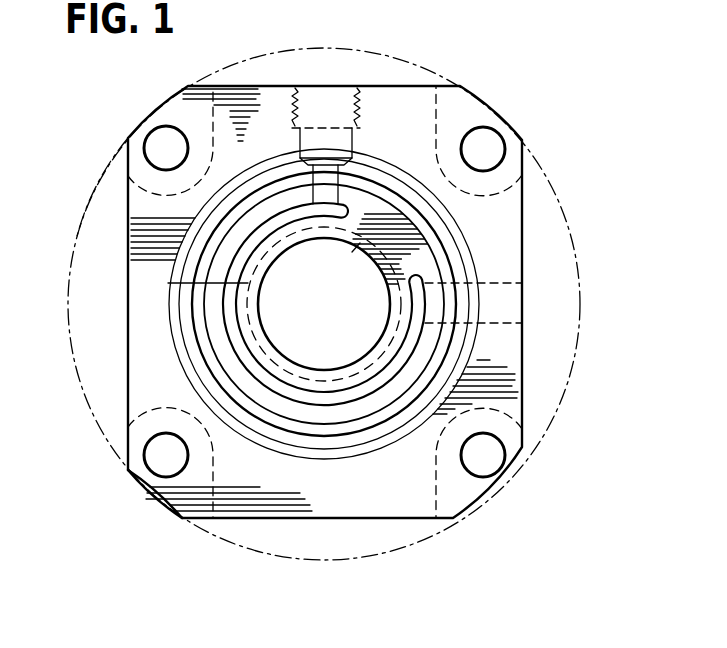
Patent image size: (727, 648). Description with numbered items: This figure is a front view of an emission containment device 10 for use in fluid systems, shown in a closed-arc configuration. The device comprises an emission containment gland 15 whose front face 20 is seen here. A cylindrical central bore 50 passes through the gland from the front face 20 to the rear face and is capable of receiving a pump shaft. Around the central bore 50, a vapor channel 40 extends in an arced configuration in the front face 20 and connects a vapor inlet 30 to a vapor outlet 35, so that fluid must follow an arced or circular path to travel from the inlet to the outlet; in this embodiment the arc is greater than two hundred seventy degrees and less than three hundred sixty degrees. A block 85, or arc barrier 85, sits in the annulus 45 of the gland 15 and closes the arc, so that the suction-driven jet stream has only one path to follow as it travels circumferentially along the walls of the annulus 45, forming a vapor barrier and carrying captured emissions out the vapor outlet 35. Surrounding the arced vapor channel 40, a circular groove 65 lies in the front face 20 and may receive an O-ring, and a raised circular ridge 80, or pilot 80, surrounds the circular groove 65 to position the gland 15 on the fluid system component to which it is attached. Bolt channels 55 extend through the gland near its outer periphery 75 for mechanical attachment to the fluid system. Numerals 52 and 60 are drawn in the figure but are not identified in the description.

The emission containment device 10 is at (545, 163).
The emission containment gland 15 is at (224, 538).
The front face 20 is at (511, 265).
The vapor inlet 30 is at (326, 98).
The vapor outlet 35 is at (507, 310).
The vapor channel 40 is at (313, 393).
The annulus 45 is at (324, 304).
The central bore 50 is at (268, 342).
The sealing region 52 is at (360, 243).
The bolt channels 55 is at (163, 147).
The passage 60 is at (168, 283).
The circular groove 65 is at (448, 330).
The outer periphery 75 is at (92, 184).
The raised circular ridge 80 is at (345, 452).
The block 85 is at (410, 242).